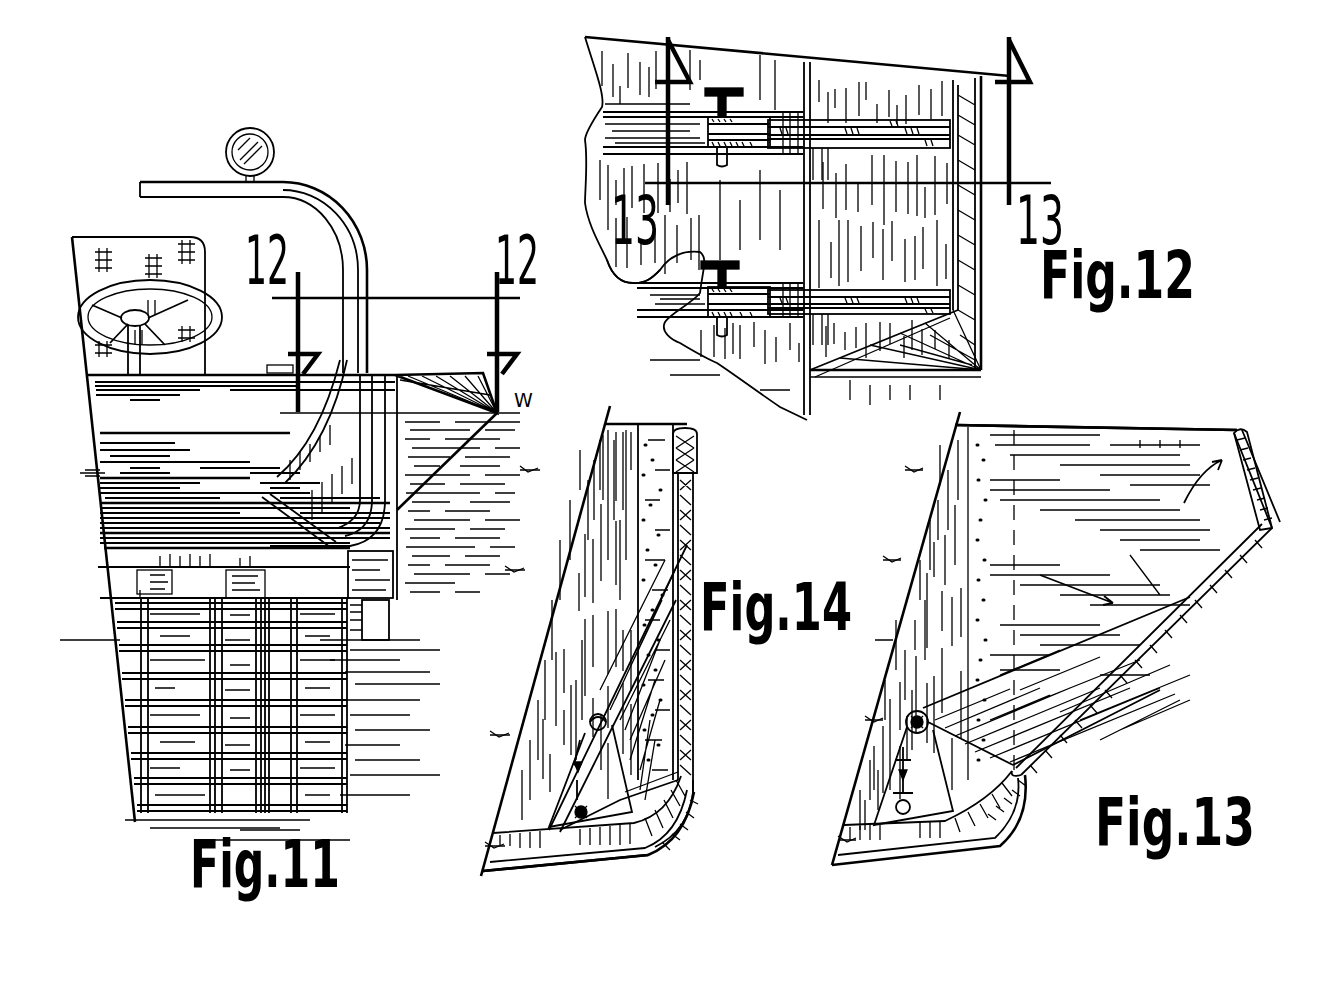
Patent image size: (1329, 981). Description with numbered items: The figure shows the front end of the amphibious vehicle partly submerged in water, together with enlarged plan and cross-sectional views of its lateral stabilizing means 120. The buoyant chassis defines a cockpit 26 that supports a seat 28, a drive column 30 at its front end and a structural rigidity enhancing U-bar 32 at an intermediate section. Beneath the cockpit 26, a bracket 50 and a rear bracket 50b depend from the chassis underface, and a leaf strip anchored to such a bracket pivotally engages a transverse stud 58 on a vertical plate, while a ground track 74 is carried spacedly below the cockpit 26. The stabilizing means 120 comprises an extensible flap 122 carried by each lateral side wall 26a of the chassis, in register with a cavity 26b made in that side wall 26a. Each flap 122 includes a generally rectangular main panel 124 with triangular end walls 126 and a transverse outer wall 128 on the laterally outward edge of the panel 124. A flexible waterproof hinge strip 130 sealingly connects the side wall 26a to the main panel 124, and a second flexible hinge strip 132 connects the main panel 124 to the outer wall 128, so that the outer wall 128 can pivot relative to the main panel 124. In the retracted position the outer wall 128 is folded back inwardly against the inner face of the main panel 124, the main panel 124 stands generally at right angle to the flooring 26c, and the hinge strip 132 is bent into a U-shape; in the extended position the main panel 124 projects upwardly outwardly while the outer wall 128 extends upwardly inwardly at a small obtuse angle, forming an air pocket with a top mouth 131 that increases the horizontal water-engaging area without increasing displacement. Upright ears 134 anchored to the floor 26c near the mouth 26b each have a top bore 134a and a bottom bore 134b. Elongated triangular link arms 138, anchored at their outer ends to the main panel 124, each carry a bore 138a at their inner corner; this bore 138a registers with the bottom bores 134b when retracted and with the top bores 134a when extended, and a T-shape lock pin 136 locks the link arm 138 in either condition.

In FIG. 11, the cockpit 26 is at (80, 476).
In FIG. 12, the cockpit 26 is at (590, 207).
In FIG. 13, the lateral side wall 26a is at (1005, 838).
In FIG. 14, the cavity 26b is at (650, 845).
In FIG. 12, the flooring 26c is at (632, 258).
In FIG. 14, the flooring 26c is at (560, 850).
In FIG. 11, the seat 28 is at (140, 250).
In FIG. 11, the drive column 30 is at (102, 290).
In FIG. 11, the U-bar 32 is at (236, 198).
In FIG. 11, the bracket 50 is at (405, 562).
In FIG. 11, the rear bracket 50b is at (125, 582).
In FIG. 11, the stud 58 is at (385, 625).
In FIG. 11, the ground track 74 is at (122, 690).
In FIG. 11, the stabilizing means 120 is at (425, 372).
In FIG. 12, the extensible flap 122 is at (996, 356).
In FIG. 12, the main panel 124 is at (955, 272).
In FIG. 14, the main panel 124 is at (685, 710).
In FIG. 13, the main panel 124 is at (1210, 585).
In FIG. 12, the triangular end wall 126 is at (965, 320).
In FIG. 12, the outer wall 128 is at (972, 95).
In FIG. 14, the outer wall 128 is at (680, 498).
In FIG. 13, the outer wall 128 is at (1240, 432).
In FIG. 14, the hinge strip 130 is at (700, 818).
In FIG. 13, the hinge strip 130 is at (1030, 770).
In FIG. 13, the top mouth 131 is at (1136, 417).
In FIG. 14, the hinge strip 132 is at (690, 425).
In FIG. 13, the hinge strip 132 is at (1272, 510).
In FIG. 14, the upright ear 134 is at (575, 765).
In FIG. 13, the upright ear 134 is at (955, 815).
In FIG. 14, the top bore 134a is at (590, 722).
In FIG. 13, the bottom bore 134b is at (912, 815).
In FIG. 12, the lock pin 136 is at (760, 100).
In FIG. 12, the link arm 138 is at (880, 130).
In FIG. 14, the link arm 138 is at (690, 552).
In FIG. 13, the link arm 138 is at (1130, 668).
In FIG. 14, the link arm bore 138a is at (575, 812).
In FIG. 13, the link arm bore 138a is at (905, 722).